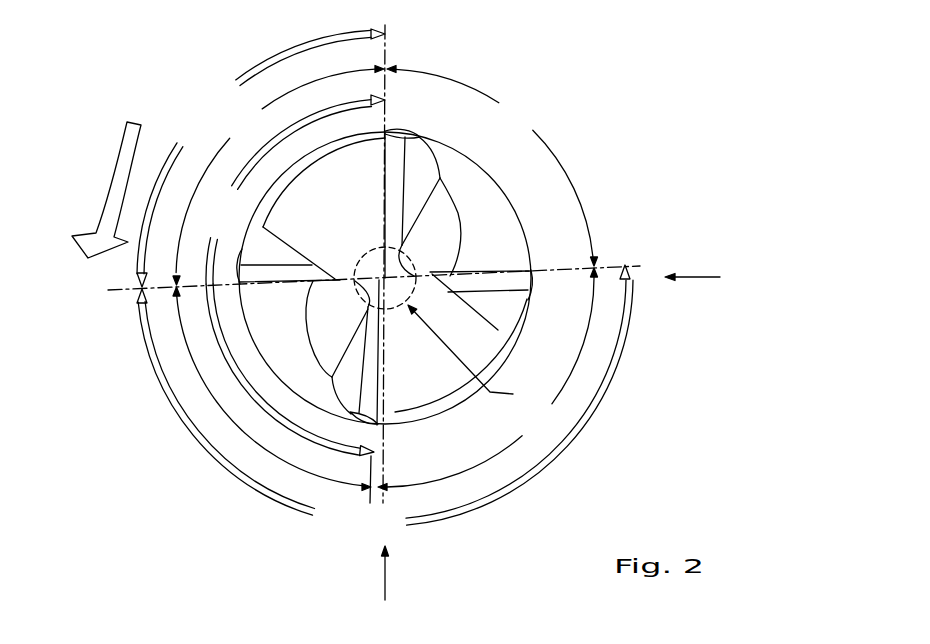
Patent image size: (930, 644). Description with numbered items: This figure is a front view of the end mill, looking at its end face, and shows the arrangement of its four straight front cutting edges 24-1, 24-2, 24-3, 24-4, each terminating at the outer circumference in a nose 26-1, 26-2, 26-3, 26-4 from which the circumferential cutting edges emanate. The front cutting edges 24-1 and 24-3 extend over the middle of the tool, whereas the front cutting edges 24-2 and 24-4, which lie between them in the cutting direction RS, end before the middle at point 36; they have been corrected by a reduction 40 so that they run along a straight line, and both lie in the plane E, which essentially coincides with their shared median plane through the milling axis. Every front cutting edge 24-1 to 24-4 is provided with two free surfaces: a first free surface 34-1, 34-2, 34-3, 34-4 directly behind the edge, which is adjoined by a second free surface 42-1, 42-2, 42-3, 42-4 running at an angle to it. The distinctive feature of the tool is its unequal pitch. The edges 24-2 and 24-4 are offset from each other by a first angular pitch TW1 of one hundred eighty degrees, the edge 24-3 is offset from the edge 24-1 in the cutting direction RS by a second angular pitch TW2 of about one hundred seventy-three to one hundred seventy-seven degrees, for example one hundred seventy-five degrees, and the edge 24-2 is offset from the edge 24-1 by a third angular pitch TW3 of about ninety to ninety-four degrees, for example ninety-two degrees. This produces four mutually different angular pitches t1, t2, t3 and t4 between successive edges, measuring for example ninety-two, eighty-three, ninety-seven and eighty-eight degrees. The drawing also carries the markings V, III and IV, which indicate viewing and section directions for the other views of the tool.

The front cutting edge 24-1 is at (384, 200).
The front cutting edge 24-2 is at (270, 286).
The front cutting edge 24-3 is at (381, 377).
The front cutting edge 24-4 is at (483, 272).
The nose 26-1 is at (388, 133).
The nose 26-2 is at (240, 286).
The nose 26-3 is at (380, 425).
The nose 26-4 is at (531, 269).
The first free surface 34-1 is at (406, 137).
The first free surface 34-2 is at (297, 281).
The first free surface 34-3 is at (367, 352).
The first free surface 34-4 is at (530, 299).
The second free surface 42-1 is at (438, 183).
The second free surface 42-2 is at (285, 262).
The second free surface 42-3 is at (364, 391).
The second free surface 42-4 is at (515, 311).
The point 36 is at (333, 277).
The reduction 40 is at (453, 213).
The cutting direction RS is at (113, 170).
The first angular pitch TW1 is at (293, 409).
The second angular pitch TW2 is at (293, 189).
The third angular pitch TW3 is at (261, 158).
The angular pitch t1 is at (278, 176).
The angular pitch t2 is at (272, 389).
The angular pitch t3 is at (488, 379).
The angular pitch t4 is at (492, 166).
The plane E is at (613, 265).
The feed direction V is at (470, 357).
The section line III is at (396, 573).
The section line IV is at (692, 267).